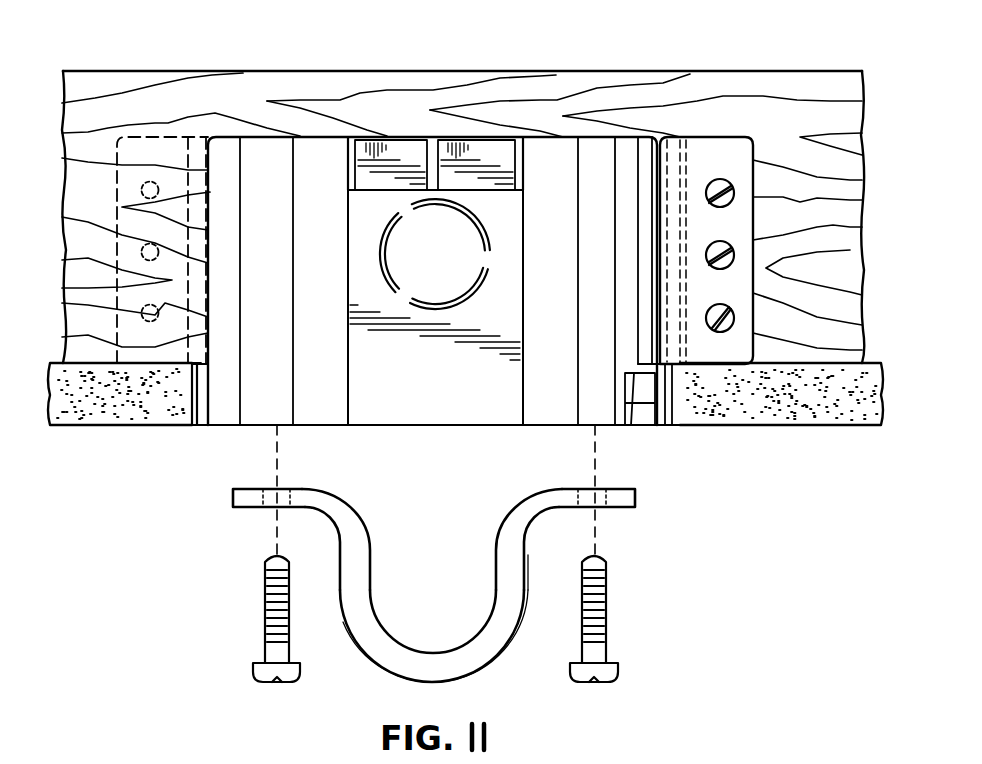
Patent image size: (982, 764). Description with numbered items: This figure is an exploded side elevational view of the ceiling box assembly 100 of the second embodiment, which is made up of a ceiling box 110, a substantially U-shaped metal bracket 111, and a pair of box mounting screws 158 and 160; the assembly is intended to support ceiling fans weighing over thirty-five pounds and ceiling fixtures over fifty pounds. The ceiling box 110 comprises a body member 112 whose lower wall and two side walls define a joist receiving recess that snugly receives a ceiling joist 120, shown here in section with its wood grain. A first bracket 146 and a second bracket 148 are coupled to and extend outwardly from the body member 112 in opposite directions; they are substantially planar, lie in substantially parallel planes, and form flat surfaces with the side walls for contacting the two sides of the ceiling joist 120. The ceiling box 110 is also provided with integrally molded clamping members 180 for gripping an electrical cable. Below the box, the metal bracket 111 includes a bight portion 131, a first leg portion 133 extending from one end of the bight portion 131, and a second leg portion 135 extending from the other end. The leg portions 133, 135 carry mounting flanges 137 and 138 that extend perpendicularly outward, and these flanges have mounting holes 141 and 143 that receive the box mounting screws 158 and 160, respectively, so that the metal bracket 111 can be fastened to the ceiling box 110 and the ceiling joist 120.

The ceiling box assembly 100 is at (158, 472).
The ceiling box 110 is at (618, 427).
The U-shaped metal bracket 111 is at (434, 576).
The body member 112 is at (597, 140).
The ceiling joist 120 is at (108, 72).
The bight portion 131 is at (458, 682).
The first leg portion 133 is at (371, 575).
The second leg portion 135 is at (525, 580).
The mounting flange 137 is at (246, 507).
The second mounting flange 138 is at (625, 507).
The mounting hole 141 is at (284, 494).
The mounting hole 143 is at (604, 492).
The first bracket 146 is at (178, 137).
The second bracket 148 is at (722, 137).
The box mounting screw 158 is at (263, 618).
The box mounting screw 160 is at (607, 608).
The clamping members 180 is at (374, 152).